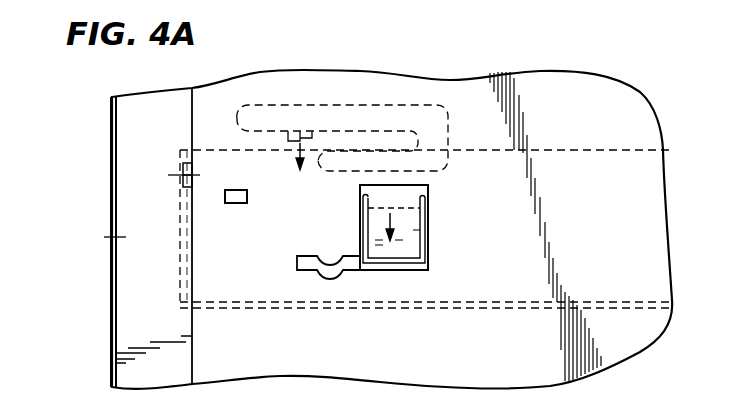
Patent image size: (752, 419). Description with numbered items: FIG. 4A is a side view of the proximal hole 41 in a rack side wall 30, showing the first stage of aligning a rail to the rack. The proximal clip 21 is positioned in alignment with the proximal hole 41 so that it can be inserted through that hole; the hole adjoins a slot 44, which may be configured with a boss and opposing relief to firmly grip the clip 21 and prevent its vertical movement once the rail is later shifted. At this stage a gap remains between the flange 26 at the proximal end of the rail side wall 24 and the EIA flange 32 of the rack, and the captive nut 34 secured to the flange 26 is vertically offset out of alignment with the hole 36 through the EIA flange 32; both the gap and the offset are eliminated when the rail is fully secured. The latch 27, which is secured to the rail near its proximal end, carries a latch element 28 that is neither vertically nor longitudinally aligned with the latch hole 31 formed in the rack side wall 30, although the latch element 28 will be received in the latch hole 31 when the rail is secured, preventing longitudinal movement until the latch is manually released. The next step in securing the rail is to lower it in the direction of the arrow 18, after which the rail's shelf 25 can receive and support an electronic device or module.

The arrow 18 is at (393, 222).
The proximal clip 21 is at (408, 215).
The rail side wall 24 is at (586, 150).
The shelf 25 is at (597, 302).
The flange 26 is at (185, 172).
The latch 27 is at (364, 105).
The latch element 28 is at (294, 130).
The rack side wall 30 is at (568, 108).
The latch hole 31 is at (237, 204).
The EIA flange 32 is at (111, 152).
The captive nut 34 is at (200, 174).
The hole 36 is at (114, 237).
The proximal hole 41 is at (428, 190).
The slot 44 is at (308, 256).